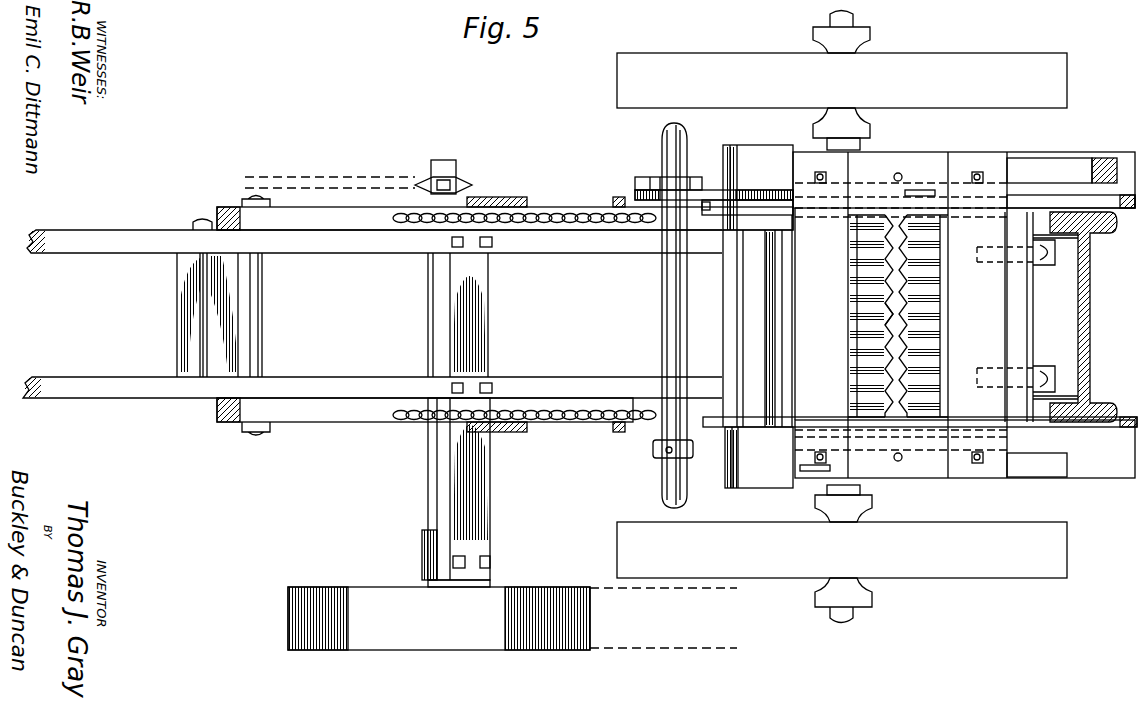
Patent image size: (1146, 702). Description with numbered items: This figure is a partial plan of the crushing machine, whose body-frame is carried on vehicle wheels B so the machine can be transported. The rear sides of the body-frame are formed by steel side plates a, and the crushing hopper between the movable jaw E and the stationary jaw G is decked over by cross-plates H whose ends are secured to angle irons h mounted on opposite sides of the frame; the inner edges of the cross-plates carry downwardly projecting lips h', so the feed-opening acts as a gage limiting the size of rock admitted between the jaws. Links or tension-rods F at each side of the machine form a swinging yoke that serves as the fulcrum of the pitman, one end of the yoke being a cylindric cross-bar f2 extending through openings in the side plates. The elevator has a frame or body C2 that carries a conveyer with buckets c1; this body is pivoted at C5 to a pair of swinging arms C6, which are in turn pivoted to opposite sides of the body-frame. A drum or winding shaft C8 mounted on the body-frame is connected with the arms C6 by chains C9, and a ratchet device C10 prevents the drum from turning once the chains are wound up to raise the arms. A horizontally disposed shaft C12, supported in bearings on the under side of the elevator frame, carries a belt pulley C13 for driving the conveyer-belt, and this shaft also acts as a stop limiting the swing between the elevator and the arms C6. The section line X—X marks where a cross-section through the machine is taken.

The vehicle wheels B is at (1000, 80).
The elevator frame or body C2 is at (123, 245).
The pivot of elevator body C5 is at (256, 434).
The swinging arms C6 is at (328, 446).
The drum or winding shaft C8 is at (670, 310).
The chains C9 is at (594, 220).
The ratchet device C10 is at (650, 185).
The shaft C12 is at (428, 506).
The belt pulley C13 is at (512, 594).
The section line X— X is at (681, 196).
The stationary jaw G is at (862, 245).
The movable jaw E is at (928, 240).
The angle irons h is at (859, 327).
The downwardly projecting lips h' is at (887, 305).
The cross-plates H is at (972, 398).
The links or tension-rods F is at (1033, 167).
The steel side plates a is at (1053, 207).
The buckets c1 is at (1092, 337).
The cylindric cross-bar f2 is at (765, 478).